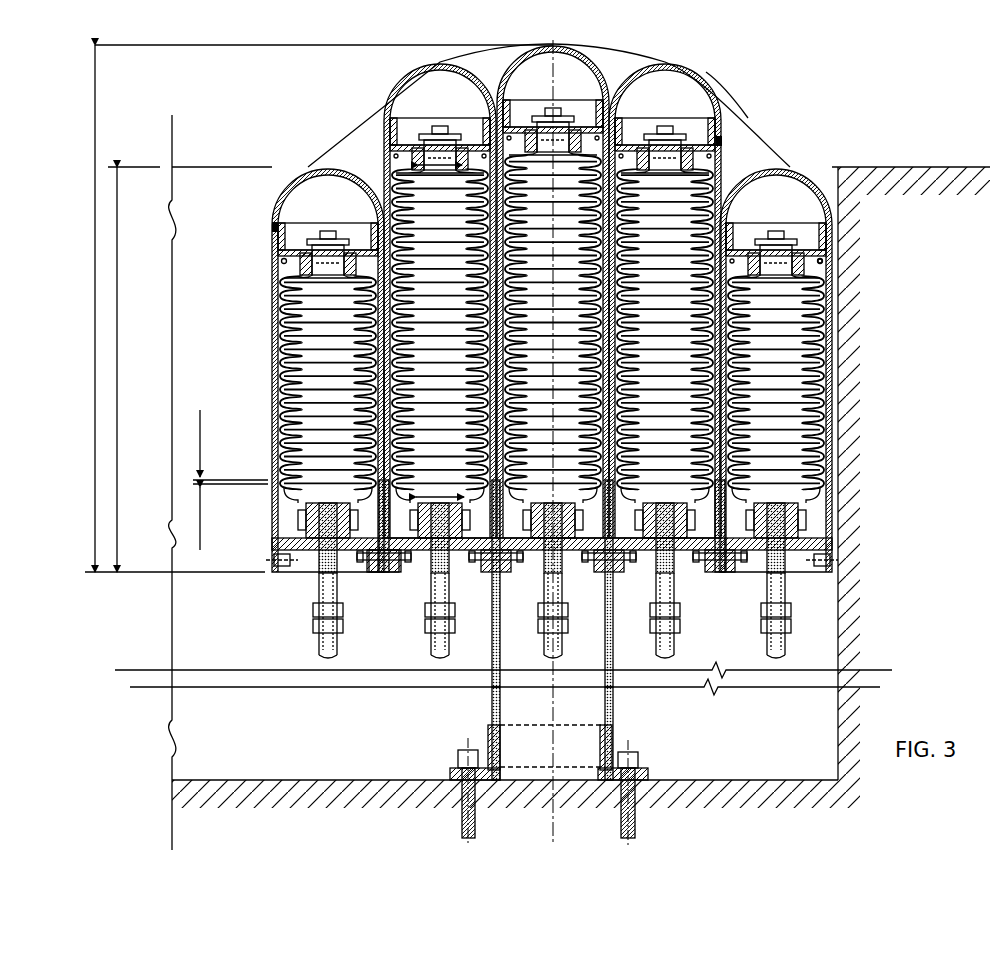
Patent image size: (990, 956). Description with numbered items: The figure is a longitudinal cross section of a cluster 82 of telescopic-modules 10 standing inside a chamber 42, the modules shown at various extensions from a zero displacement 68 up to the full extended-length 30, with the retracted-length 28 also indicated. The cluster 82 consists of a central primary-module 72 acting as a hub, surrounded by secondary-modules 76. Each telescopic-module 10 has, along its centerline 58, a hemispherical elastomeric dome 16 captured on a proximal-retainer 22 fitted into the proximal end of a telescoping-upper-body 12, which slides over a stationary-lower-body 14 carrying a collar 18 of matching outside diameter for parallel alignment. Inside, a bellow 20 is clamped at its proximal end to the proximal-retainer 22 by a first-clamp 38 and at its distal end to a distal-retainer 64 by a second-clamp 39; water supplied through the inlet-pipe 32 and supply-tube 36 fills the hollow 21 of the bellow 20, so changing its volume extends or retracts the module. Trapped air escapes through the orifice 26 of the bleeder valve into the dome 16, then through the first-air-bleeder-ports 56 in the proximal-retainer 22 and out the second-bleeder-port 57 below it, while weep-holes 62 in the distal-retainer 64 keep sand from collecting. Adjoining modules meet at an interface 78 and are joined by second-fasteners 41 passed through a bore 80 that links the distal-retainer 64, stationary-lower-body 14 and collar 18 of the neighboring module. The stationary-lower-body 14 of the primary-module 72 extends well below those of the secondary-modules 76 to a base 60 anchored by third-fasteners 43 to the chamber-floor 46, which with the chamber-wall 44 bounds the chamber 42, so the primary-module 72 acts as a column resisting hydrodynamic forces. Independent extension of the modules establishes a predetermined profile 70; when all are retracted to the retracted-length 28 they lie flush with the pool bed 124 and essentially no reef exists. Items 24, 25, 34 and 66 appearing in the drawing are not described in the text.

The telescopic-module 10 is at (567, 415).
The telescoping-upper-body 12 is at (276, 338).
The stationary-lower-body 14 is at (276, 410).
The dome 16 is at (740, 184).
The collar 18 is at (276, 499).
The bellow 20 is at (290, 274).
The hollow 21 is at (680, 284).
The proximal-retainer 22 is at (416, 127).
The width 24 is at (440, 176).
The width 25 is at (440, 485).
The orifice 26 is at (330, 232).
The retracted-length 28 is at (134, 369).
The extended-length 30 is at (97, 82).
The inlet-pipe 32 is at (319, 597).
The nuts 34 is at (313, 628).
The supply-tube 36 is at (320, 647).
The first-clamp 38 is at (282, 272).
The second-clamp 39 is at (300, 520).
The second-fastener 41 is at (397, 562).
The chamber 42 is at (210, 650).
The third-fastener 43 is at (456, 752).
The chamber-wall 44 is at (835, 708).
The chamber-floor 46 is at (338, 779).
The first-air-bleeder-port 56 is at (294, 243).
The second-bleeder-port 57 is at (282, 260).
The centerline 58 is at (550, 820).
The base 60 is at (615, 742).
The weep-hole 62 is at (368, 556).
The distal-retainer 64 is at (310, 548).
The skirt 66 is at (330, 503).
The zero displacement 68 is at (204, 452).
The profile 70 is at (752, 130).
The primary-module 72 is at (490, 704).
The secondary-module 76 is at (723, 141).
The interface 78 is at (490, 560).
The bore 80 is at (274, 561).
The cluster 82 is at (732, 88).
The pool bed 124 is at (215, 165).